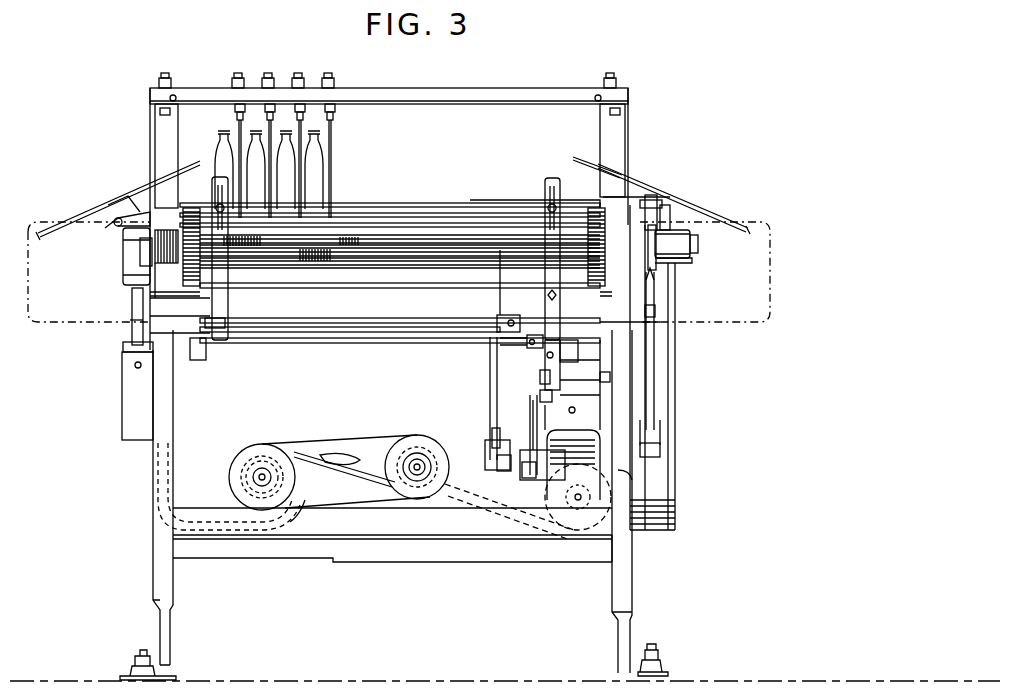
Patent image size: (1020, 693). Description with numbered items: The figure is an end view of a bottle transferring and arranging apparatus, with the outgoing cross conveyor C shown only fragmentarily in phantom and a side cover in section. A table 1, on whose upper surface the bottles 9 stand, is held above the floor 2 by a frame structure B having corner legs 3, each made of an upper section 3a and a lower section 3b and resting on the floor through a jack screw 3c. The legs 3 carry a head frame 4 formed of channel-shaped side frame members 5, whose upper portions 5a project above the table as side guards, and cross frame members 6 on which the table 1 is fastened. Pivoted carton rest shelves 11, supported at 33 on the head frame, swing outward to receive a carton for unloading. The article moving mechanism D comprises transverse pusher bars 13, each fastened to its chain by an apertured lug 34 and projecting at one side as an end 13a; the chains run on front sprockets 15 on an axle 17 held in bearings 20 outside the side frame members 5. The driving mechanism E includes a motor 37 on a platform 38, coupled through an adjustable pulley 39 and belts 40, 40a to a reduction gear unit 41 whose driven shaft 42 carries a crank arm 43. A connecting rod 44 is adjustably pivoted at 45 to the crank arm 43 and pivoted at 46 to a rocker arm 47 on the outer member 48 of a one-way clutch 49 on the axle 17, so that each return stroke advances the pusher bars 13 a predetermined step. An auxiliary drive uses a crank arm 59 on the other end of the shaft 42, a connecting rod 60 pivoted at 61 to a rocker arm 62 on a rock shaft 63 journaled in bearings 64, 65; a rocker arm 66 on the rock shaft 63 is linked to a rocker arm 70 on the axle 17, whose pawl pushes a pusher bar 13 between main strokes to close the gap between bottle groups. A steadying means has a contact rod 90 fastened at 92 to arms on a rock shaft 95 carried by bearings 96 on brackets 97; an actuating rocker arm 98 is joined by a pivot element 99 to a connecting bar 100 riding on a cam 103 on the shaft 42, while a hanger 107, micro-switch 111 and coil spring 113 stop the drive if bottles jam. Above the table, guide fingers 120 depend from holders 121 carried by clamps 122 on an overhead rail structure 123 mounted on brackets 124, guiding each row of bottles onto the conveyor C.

The table 1 is at (384, 208).
The floor 2 is at (200, 681).
The uprights or legs 3 is at (152, 575).
The upper leg section 3a is at (160, 527).
The lower leg section 3b is at (160, 624).
The supporting jack screw 3c is at (138, 657).
The head frame 4 is at (125, 320).
The longitudinal side frame members 5 is at (150, 296).
The side guard portions 5a is at (130, 195).
The cross frame members 6 is at (330, 262).
The bottles 9 is at (322, 183).
The pivoted carton rest shelves 11 is at (138, 190).
The transverse pusher bars 13 is at (485, 205).
The projecting ends of pusher bars 13a is at (574, 165).
The front sprockets 15 is at (598, 210).
The front axle 17 is at (502, 250).
The bearings 20 is at (125, 252).
The shelf pivot support 33 is at (104, 234).
The attaching apertured ear or lug 34 is at (200, 282).
The motor 37 is at (262, 444).
The supporting platform 38 is at (292, 522).
The adjustable pulley 39 is at (424, 436).
The belt 40 is at (370, 444).
The belt 40a is at (450, 492).
The reduction gear unit 41 is at (578, 480).
The main drive shaft 42 is at (497, 462).
The crank arm 43 is at (660, 427).
The connecting rod 44 is at (666, 413).
The adjustable pivotal connection 45 is at (660, 451).
The pivotal connection 46 is at (660, 192).
The rocker arm 47 is at (678, 218).
The outer clutch member 48 is at (698, 247).
The one-way clutch 49 is at (702, 268).
The crank arm 59 is at (533, 428).
The connecting rod 60 is at (492, 437).
The pivotal connection 61 is at (490, 337).
The rocker arm 62 is at (498, 315).
The rock shaft 63 is at (340, 318).
The bearing 64 is at (152, 345).
The bearing 65 is at (660, 324).
The rocker arm 66 is at (660, 308).
The rocker arm 70 is at (630, 205).
The contact member 90 is at (428, 212).
The adjustable fastening 92 is at (214, 206).
The rock shaft 95 is at (345, 345).
The bearings 96 is at (600, 356).
The brackets 97 is at (215, 322).
The actuating rocker arm 98 is at (540, 377).
The pivot element 99 is at (540, 397).
The connecting bar 100 is at (546, 416).
The cam 103 is at (526, 476).
The depending hanger 107 is at (602, 382).
The micro-switch 111 is at (545, 363).
The coil spring 113 is at (574, 410).
The guide blades or fingers 120 is at (333, 150).
The holders 121 is at (335, 122).
The clamps 122 is at (330, 76).
The overhead supporting rail structure 123 is at (440, 92).
The brackets 124 is at (160, 150).
The frame structure B is at (150, 481).
The outgoing cross conveyor C is at (72, 326).
The article moving mechanism D is at (125, 270).
The driving mechanism E is at (476, 435).